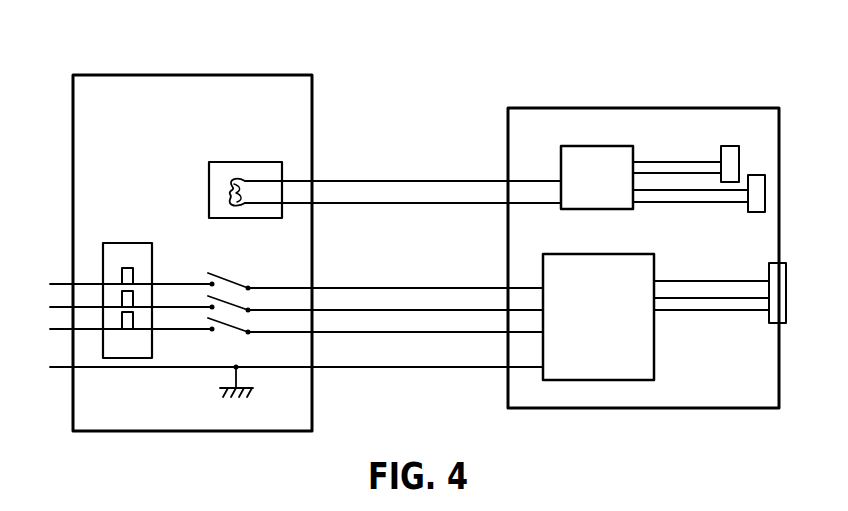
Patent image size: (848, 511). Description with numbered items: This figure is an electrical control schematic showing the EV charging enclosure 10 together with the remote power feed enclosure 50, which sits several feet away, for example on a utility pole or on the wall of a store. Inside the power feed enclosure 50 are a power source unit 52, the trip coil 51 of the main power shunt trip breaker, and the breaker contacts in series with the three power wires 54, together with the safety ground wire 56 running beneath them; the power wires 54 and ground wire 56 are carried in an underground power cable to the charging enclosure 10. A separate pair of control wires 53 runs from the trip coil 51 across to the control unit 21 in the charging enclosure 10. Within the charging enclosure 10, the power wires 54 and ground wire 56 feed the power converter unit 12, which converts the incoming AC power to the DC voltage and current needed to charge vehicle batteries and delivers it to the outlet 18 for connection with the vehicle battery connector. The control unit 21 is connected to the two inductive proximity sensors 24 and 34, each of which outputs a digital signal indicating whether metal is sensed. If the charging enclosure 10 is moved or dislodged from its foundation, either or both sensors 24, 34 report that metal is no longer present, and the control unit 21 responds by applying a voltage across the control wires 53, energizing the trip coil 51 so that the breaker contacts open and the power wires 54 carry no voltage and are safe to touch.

The EV charging station enclosure 10 is at (514, 128).
The power converter unit 12 is at (590, 363).
The outlet 18 is at (778, 292).
The control unit 21 is at (590, 151).
The proximity sensor 24 is at (728, 163).
The proximity sensor 34 is at (757, 190).
The power feed enclosure 50 is at (123, 107).
The trip coil 51 is at (236, 178).
The power source unit 52 is at (124, 250).
The control wires 53 is at (428, 203).
The power wires 54 is at (443, 332).
The safety ground wire 56 is at (425, 368).